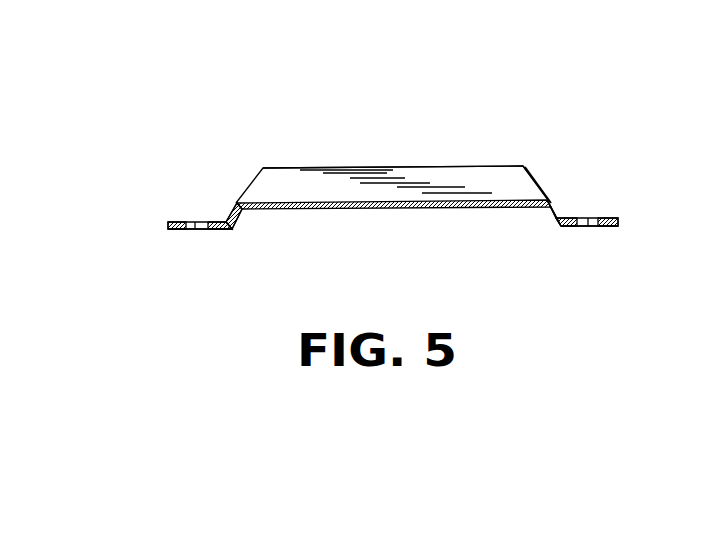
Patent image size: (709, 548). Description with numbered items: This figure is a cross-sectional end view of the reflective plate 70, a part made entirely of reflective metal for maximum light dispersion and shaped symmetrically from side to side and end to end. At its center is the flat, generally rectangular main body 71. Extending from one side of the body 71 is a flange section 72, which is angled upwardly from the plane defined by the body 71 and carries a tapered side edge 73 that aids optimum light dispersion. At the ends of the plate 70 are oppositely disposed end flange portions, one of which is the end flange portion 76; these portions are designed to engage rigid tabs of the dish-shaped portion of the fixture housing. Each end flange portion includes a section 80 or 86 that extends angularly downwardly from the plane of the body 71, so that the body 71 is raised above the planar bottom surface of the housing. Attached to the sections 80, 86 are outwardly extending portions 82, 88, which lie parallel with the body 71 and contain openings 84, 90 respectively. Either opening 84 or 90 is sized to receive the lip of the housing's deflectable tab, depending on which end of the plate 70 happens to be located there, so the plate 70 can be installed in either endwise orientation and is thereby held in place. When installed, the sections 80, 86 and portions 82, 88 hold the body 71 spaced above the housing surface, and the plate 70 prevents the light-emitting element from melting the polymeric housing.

The reflective plate 70 is at (375, 134).
The main body 71 is at (448, 209).
The flange section 72 is at (503, 172).
The tapered side edge 73 is at (535, 181).
The end flange portion 76 is at (206, 178).
The section 80 is at (558, 208).
The outwardly extending portion 82 is at (612, 217).
The opening 84 is at (585, 227).
The section 86 is at (221, 213).
The outwardly extending portion 88 is at (178, 222).
The opening 90 is at (195, 229).